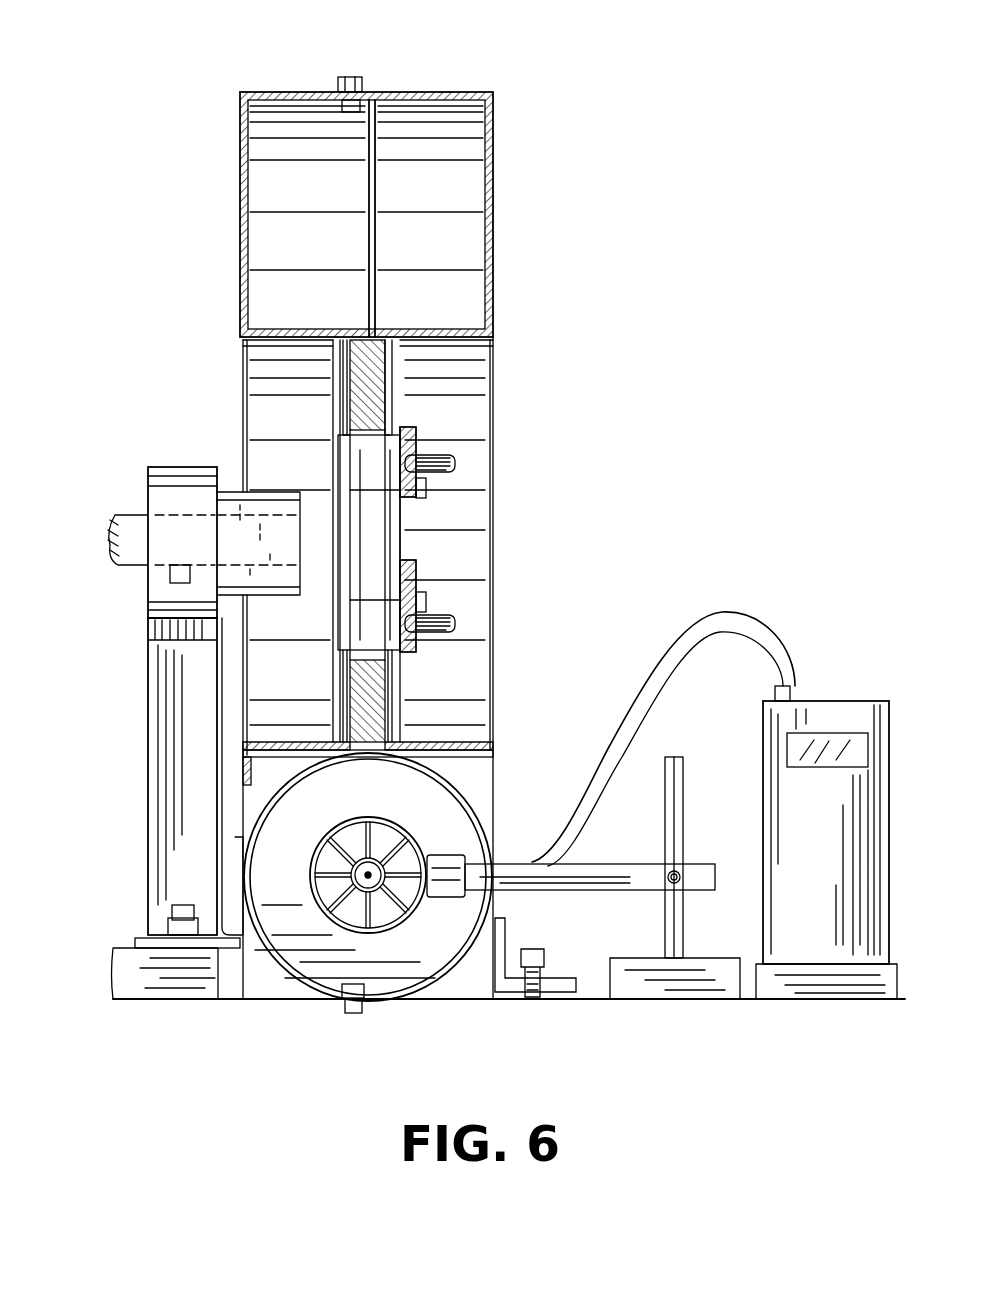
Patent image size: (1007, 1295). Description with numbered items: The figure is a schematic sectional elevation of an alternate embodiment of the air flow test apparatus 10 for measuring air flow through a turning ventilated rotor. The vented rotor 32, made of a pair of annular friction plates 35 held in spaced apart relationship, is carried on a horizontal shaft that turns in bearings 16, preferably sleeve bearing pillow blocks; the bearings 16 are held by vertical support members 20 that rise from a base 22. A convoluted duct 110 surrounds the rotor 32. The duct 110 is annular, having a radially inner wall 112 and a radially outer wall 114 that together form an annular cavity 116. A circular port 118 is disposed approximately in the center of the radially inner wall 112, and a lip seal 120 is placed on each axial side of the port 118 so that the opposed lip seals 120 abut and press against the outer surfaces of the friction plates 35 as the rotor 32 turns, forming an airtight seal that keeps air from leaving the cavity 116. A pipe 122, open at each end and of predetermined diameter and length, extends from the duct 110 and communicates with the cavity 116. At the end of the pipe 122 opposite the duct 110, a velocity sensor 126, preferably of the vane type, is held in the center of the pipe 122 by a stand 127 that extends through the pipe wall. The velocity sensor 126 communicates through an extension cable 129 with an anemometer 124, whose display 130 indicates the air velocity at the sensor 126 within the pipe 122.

The air flow test apparatus 10 is at (121, 442).
The bearings 16 is at (178, 468).
The vertical support members 20 is at (148, 700).
The base 22 is at (143, 992).
The vented rotor 32 is at (390, 388).
The annular friction plates 35 is at (385, 697).
The convoluted duct 110 is at (502, 165).
The radially inner wall 112 is at (465, 345).
The radially outer wall 114 is at (440, 92).
The annular cavity 116 is at (358, 202).
The circular port 118 is at (351, 320).
The lip seal 120 is at (383, 337).
The pipe 122 is at (480, 815).
The anemometer 124 is at (763, 748).
The velocity sensor 126 is at (352, 920).
The stand 127 is at (609, 892).
The extension cable 129 is at (672, 636).
The display 130 is at (822, 735).